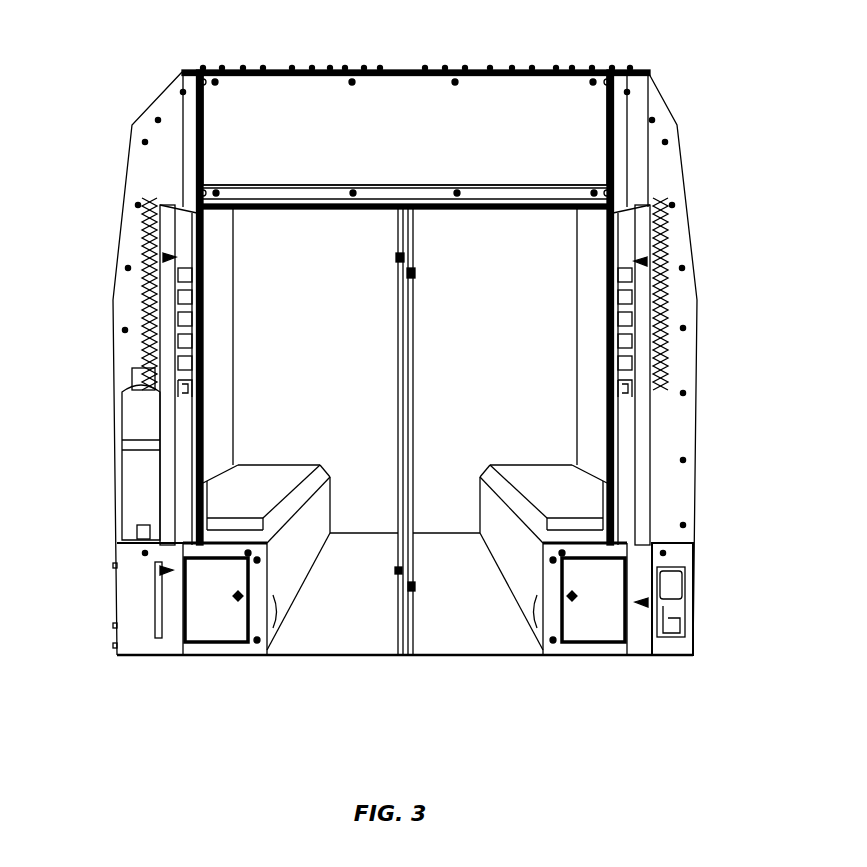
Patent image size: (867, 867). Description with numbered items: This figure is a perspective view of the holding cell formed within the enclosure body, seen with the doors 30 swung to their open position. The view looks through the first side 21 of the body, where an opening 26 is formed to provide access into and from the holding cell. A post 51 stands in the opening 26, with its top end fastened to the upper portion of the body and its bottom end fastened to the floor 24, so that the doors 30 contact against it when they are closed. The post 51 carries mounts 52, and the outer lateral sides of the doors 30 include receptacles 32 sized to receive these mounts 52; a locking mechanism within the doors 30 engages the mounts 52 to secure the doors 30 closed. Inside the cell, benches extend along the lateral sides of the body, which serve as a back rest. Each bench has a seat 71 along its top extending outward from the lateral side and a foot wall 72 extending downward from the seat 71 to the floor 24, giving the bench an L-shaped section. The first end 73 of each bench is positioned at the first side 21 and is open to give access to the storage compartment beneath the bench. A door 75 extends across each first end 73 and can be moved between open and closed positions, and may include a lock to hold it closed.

The first side 21 is at (272, 135).
The floor 24 is at (348, 612).
The opening 26 is at (487, 252).
The doors 30 is at (187, 425).
The receptacles 32 is at (170, 257).
The post 51 is at (399, 253).
The mounts 52 is at (413, 272).
The seat 71 is at (245, 545).
The foot wall 72 is at (273, 625).
The first end 73 is at (257, 595).
The door 75 is at (213, 593).